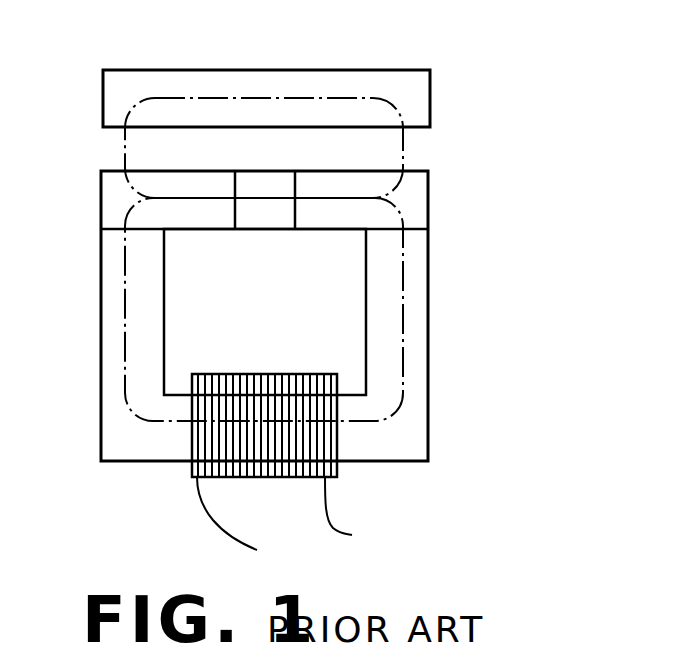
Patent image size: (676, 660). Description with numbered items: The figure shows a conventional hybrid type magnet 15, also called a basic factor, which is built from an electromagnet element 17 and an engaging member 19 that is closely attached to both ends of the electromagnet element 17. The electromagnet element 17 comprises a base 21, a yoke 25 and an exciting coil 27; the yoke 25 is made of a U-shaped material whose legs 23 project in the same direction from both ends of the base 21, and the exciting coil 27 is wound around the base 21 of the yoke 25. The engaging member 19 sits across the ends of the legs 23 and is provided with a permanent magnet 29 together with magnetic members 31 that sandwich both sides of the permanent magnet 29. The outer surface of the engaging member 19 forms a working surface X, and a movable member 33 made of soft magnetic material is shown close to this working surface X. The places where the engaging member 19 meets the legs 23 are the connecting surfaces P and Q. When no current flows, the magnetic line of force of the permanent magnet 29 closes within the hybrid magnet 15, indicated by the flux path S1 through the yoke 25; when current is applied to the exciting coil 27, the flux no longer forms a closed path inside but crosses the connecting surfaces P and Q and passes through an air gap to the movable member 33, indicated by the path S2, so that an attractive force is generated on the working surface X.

The hybrid type magnet 15 is at (448, 310).
The electromagnet element 17 is at (429, 257).
The engaging member 19 is at (429, 203).
The base 21 is at (376, 463).
The legs 23 is at (428, 346).
The yoke 25 is at (428, 462).
The exciting coil 27 is at (190, 473).
The permanent magnet 29 is at (288, 178).
The magnetic members 31 is at (197, 178).
The movable member 33 is at (430, 110).
The first magnetic flux path S1 is at (403, 377).
The second magnetic flux path S2 is at (335, 98).
The connecting surface P is at (101, 240).
The connecting surface Q is at (428, 231).
The working surface X is at (427, 172).